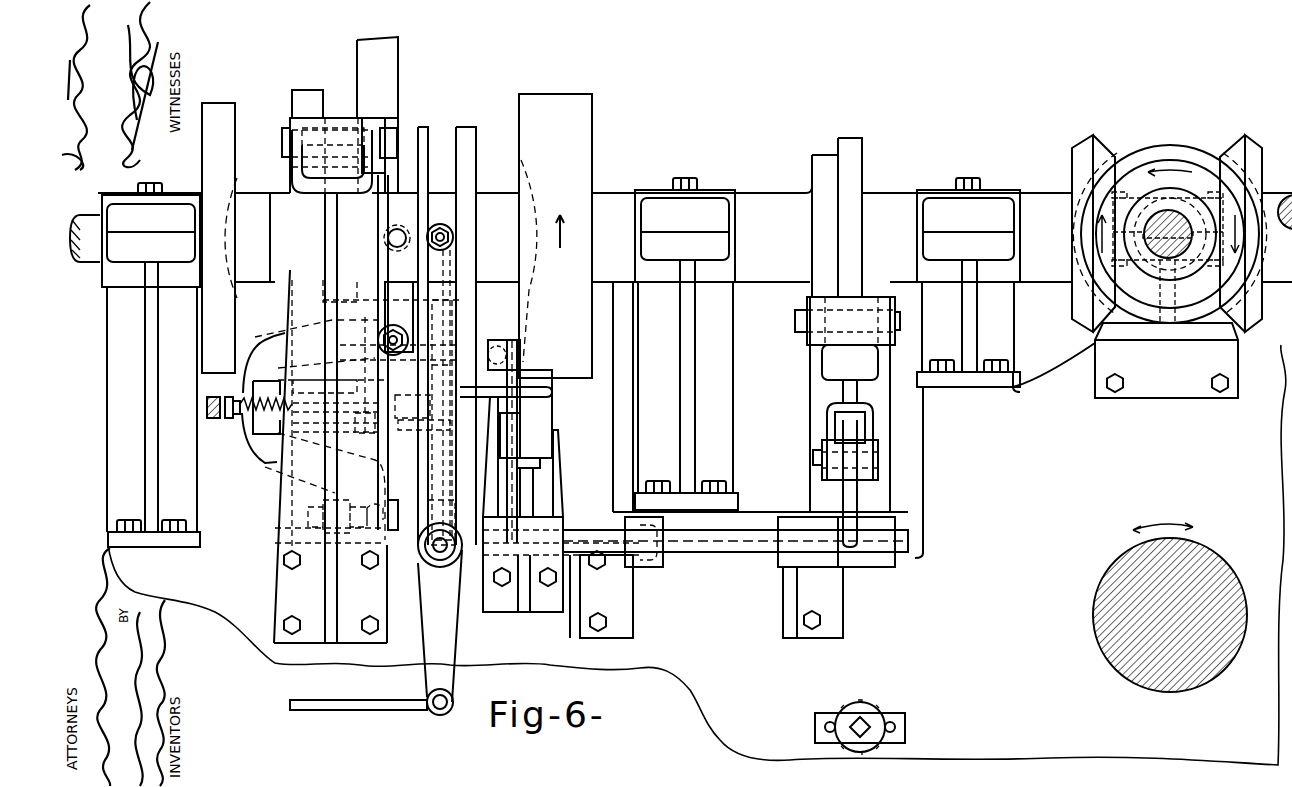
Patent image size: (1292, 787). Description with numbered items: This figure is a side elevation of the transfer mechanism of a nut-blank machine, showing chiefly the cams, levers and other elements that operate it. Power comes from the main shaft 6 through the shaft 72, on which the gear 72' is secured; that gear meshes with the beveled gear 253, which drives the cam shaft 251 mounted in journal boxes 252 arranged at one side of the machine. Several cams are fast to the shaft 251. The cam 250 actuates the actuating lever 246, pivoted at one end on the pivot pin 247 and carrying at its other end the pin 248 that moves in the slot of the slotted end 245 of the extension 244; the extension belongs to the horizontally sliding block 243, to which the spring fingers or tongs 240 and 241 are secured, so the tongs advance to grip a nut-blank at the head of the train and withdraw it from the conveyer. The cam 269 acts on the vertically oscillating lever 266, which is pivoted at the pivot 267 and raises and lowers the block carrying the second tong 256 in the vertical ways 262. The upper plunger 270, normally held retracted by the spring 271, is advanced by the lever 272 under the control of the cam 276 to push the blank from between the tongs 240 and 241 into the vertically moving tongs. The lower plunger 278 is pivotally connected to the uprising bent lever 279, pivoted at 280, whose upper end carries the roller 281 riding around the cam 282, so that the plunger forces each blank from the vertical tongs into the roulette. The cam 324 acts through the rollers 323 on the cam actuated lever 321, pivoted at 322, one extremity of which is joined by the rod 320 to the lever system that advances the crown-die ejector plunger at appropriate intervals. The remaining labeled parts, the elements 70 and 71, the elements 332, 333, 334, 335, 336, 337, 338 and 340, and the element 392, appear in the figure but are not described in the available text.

The main shaft 6 is at (1170, 607).
The shaft 70 is at (1276, 200).
The plate 71 is at (1248, 150).
The shaft 72 is at (1167, 255).
The gear 72' is at (1170, 221).
The spring finger or tong 240 is at (434, 378).
The spring finger or tong 241 is at (410, 426).
The block 243 is at (262, 386).
The extension 244 is at (418, 381).
The slotted end 245 is at (473, 412).
The actuating lever 246 is at (543, 393).
The pivot pin 247 is at (545, 440).
The pin 248 is at (450, 435).
The cam 250 is at (555, 236).
The shaft 251 is at (85, 258).
The journal boxes 252 is at (561, 362).
The beveled gear 253 is at (1092, 150).
The second tong 256 is at (360, 387).
The vertical ways 262 is at (362, 63).
The vertically oscillating lever 266 is at (342, 130).
The pivot 267 is at (297, 126).
The cam 269 is at (305, 96).
The upper plunger 270 is at (360, 420).
The spring 271 is at (236, 418).
The lever 272 is at (215, 397).
The cam 276 is at (216, 110).
The lower plunger 278 is at (402, 532).
The uprising bent lever 279 is at (400, 296).
The pivot 280 is at (380, 341).
The roller 281 is at (400, 230).
The cam 282 is at (378, 204).
The rod 320 is at (372, 702).
The cam actuated lever 321 is at (448, 270).
The pivot 322 is at (440, 556).
The rollers 323 is at (440, 225).
The cam 324 is at (458, 136).
The pivot block 332 is at (497, 347).
The rod 333 is at (512, 446).
The shaft 334 is at (710, 545).
The rod 335 is at (845, 496).
The yoke 336 is at (830, 354).
The lever 337 is at (880, 421).
The clamp 338 is at (802, 320).
The rod 340 is at (850, 145).
The ratchet 392 is at (855, 714).